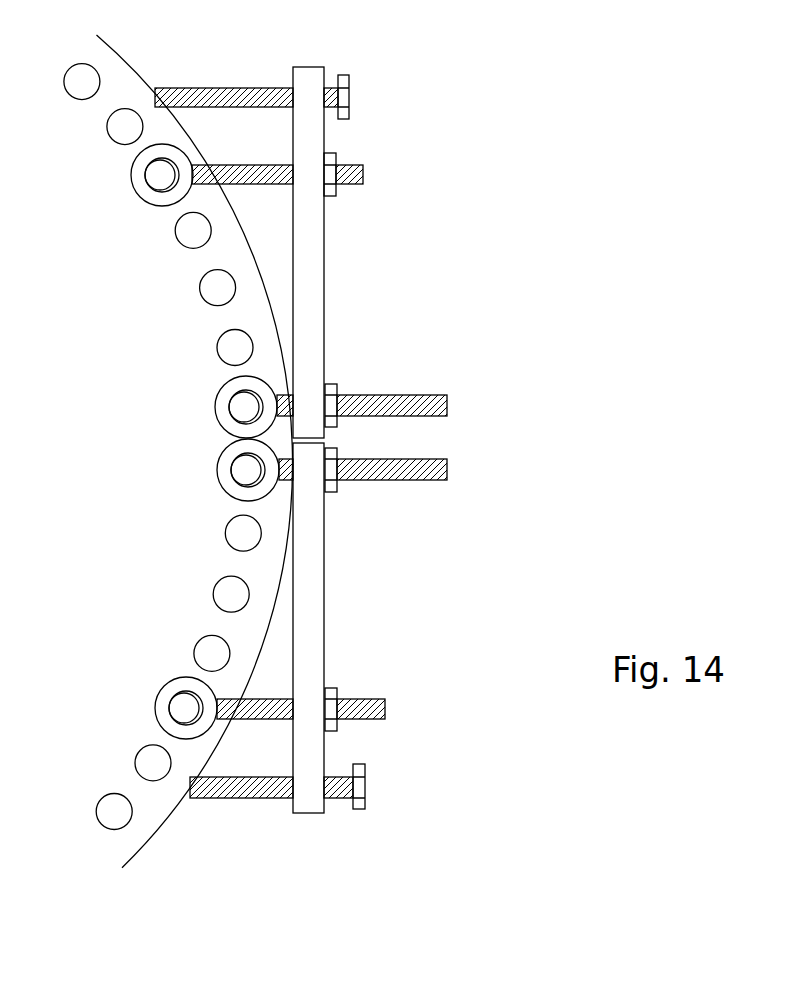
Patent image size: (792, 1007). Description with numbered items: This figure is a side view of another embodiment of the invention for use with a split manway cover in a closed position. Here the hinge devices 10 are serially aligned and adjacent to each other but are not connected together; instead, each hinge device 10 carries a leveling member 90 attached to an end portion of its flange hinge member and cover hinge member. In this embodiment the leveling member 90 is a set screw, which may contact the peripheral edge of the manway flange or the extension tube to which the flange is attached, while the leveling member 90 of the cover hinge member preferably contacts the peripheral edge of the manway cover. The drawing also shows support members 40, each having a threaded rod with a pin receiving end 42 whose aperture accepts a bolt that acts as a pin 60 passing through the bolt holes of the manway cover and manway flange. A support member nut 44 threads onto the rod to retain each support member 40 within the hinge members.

The hinge device 10 is at (340, 258).
The support member 40 is at (447, 407).
The pin receiving end 42 is at (220, 462).
The support member nut 44 is at (332, 383).
The pin 60 is at (162, 173).
The leveling member 90 is at (235, 88).